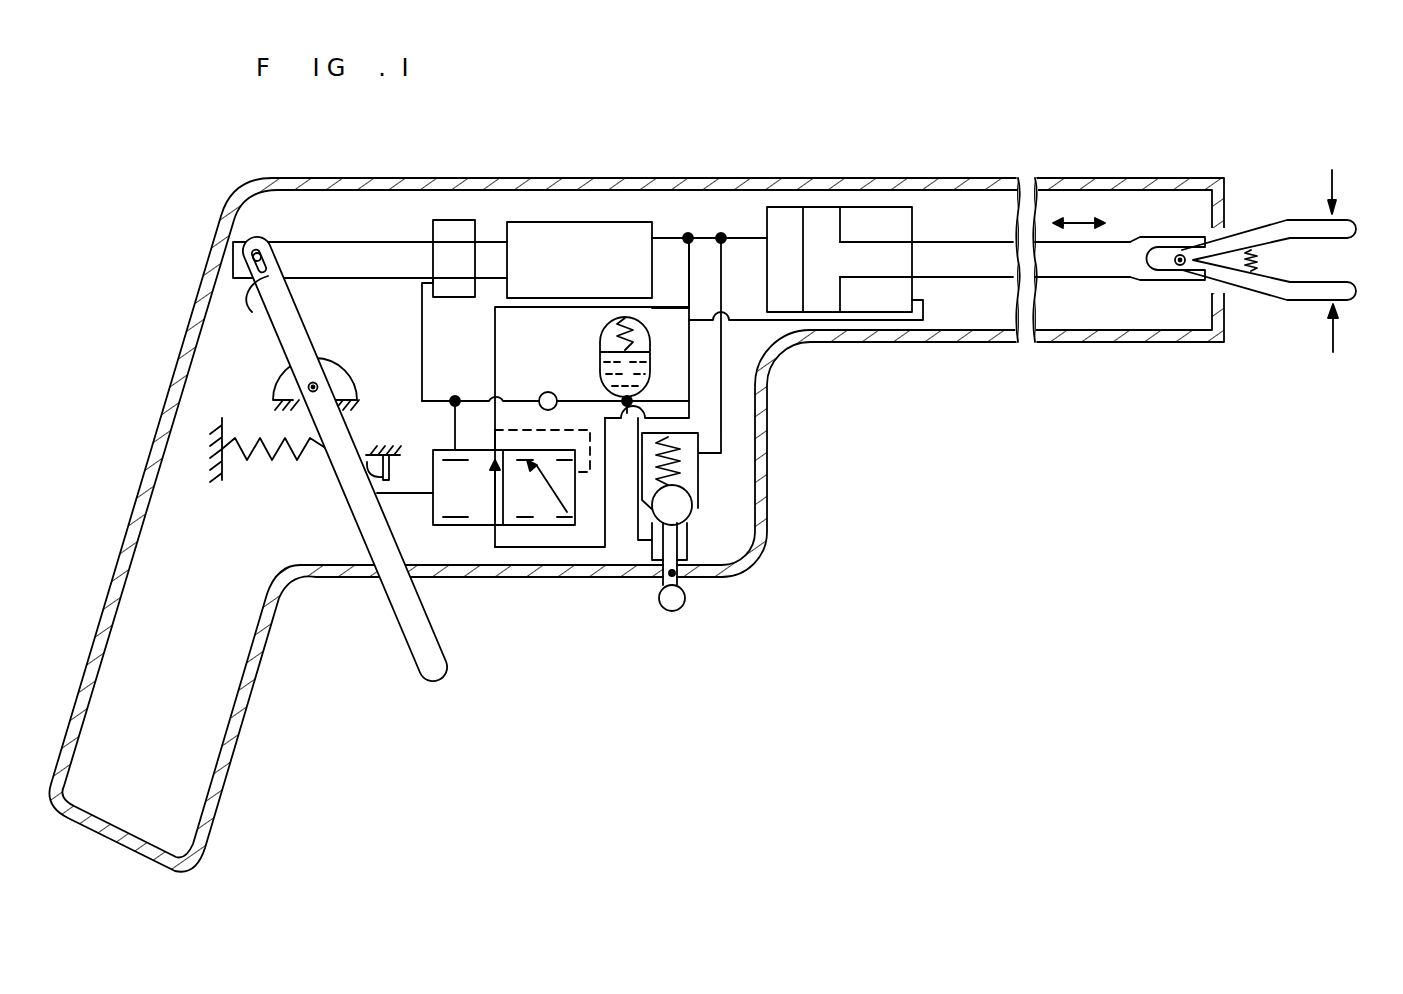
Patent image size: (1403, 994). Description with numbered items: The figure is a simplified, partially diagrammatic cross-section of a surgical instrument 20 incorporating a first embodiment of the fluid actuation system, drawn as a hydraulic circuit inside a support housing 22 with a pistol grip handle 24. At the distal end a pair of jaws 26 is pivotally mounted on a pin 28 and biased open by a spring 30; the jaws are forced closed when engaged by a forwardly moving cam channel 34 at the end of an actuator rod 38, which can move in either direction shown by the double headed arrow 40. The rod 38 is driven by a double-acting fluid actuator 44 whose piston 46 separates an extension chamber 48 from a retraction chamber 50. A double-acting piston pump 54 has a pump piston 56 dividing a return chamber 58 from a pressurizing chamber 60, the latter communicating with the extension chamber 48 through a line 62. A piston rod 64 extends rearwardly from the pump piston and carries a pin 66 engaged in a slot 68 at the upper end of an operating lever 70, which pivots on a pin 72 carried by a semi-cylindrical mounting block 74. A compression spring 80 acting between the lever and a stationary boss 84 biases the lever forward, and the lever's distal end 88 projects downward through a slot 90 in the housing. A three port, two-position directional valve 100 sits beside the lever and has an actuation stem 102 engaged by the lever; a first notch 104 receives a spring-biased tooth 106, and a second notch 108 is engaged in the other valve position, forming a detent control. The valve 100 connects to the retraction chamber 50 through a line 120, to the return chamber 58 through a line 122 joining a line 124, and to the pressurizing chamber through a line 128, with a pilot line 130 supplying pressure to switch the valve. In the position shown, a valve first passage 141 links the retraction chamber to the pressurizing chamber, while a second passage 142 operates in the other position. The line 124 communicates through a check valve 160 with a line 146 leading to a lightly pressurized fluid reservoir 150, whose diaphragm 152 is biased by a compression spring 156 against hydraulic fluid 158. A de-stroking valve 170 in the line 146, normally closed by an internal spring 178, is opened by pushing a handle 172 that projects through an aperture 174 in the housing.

The surgical instrument 20 is at (813, 126).
The support housing 22 is at (572, 178).
The pistol grip handle 24 is at (300, 593).
The jaws 26 is at (1345, 233).
The pin 28 is at (1182, 254).
The spring 30 is at (1260, 258).
The cam channel 34 is at (1170, 282).
The actuator rod 38 is at (1048, 260).
The double headed arrow 40 is at (1075, 222).
The double-acting fluid actuator 44 is at (926, 212).
The piston 46 is at (825, 222).
The extension chamber 48 is at (787, 225).
The retraction chamber 50 is at (880, 220).
The double-acting fluid pressure piston pump 54 is at (661, 218).
The pump piston 56 is at (488, 242).
The return chamber 58 is at (453, 219).
The pressurizing chamber 60 is at (556, 240).
The line 62 is at (721, 236).
The piston rod 64 is at (340, 257).
The pin 66 is at (258, 252).
The slot 68 is at (265, 277).
The operating lever 70 is at (293, 345).
The pin 72 is at (308, 386).
The semi-cylindrical mounting block 74 is at (347, 368).
The compression spring 80 is at (260, 455).
The stationary boss 84 is at (228, 467).
The distal end 88 is at (373, 583).
The slot 90 is at (325, 568).
The directional valve 100 is at (473, 540).
The actuation rod or stem 102 is at (421, 498).
The first notch 104 is at (383, 477).
The tooth 106 is at (398, 454).
The second notch 108 is at (413, 477).
The line 120 is at (927, 317).
The line 122 is at (455, 398).
The line 124 is at (433, 285).
The line 128 is at (686, 262).
The pilot line 130 is at (508, 425).
The valve first passage 141 is at (490, 486).
The valve second passage 142 is at (558, 500).
The line 146 is at (760, 360).
The fluid reservoir 150 is at (585, 332).
The diaphragm 152 is at (653, 370).
The compression spring 156 is at (612, 306).
The hydraulic fluid 158 is at (633, 402).
The check valve 160 is at (555, 380).
The de-stroking valve 170 is at (705, 520).
The handle 172 is at (684, 605).
The aperture 174 is at (678, 577).
The internal spring 178 is at (683, 466).